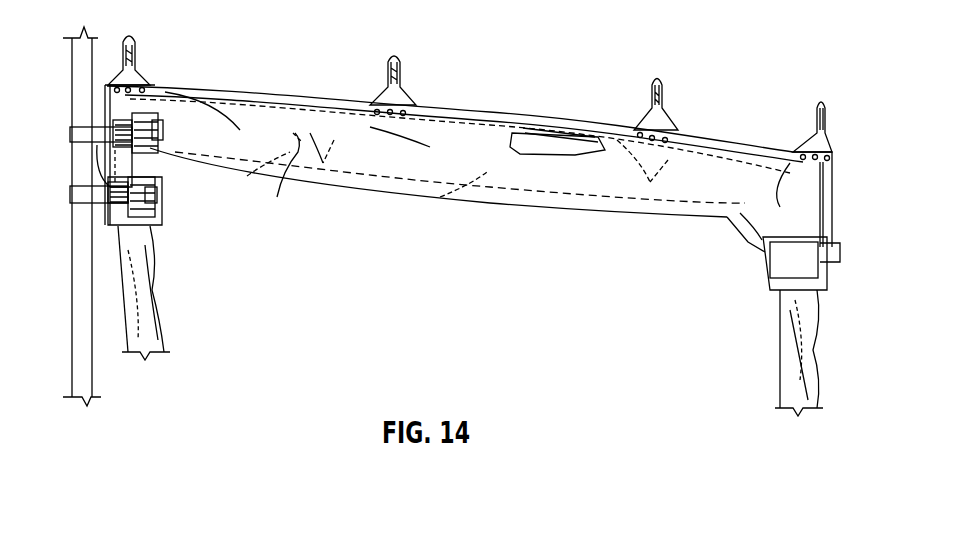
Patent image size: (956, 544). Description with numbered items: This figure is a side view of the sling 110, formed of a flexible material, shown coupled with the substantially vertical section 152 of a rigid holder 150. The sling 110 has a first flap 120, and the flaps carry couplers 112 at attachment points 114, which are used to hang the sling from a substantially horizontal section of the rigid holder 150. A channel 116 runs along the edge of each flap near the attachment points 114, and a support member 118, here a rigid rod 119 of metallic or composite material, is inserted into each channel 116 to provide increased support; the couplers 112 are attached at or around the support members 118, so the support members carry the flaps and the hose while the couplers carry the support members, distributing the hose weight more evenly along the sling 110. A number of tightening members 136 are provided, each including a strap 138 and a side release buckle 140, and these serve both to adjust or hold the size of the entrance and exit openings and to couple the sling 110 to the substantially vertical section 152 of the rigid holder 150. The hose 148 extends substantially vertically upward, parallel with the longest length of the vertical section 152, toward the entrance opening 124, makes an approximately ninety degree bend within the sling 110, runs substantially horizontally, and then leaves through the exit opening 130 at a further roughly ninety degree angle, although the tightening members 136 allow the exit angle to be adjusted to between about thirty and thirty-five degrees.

The sling 110 is at (360, 192).
The coupler 112 is at (134, 45).
The attachment point 114 is at (148, 87).
The channel 116 is at (578, 148).
The support member 118 is at (533, 130).
The rigid rod 119 is at (548, 130).
The first flap 120 is at (278, 178).
The entrance opening 124 is at (157, 233).
The exit opening 130 is at (825, 290).
The tightening member 136 is at (77, 134).
The strap 138 is at (72, 130).
The side release buckle 140 is at (162, 150).
The hose 148 is at (150, 303).
The rigid holder 150 is at (78, 312).
The substantially vertical section 152 is at (97, 380).